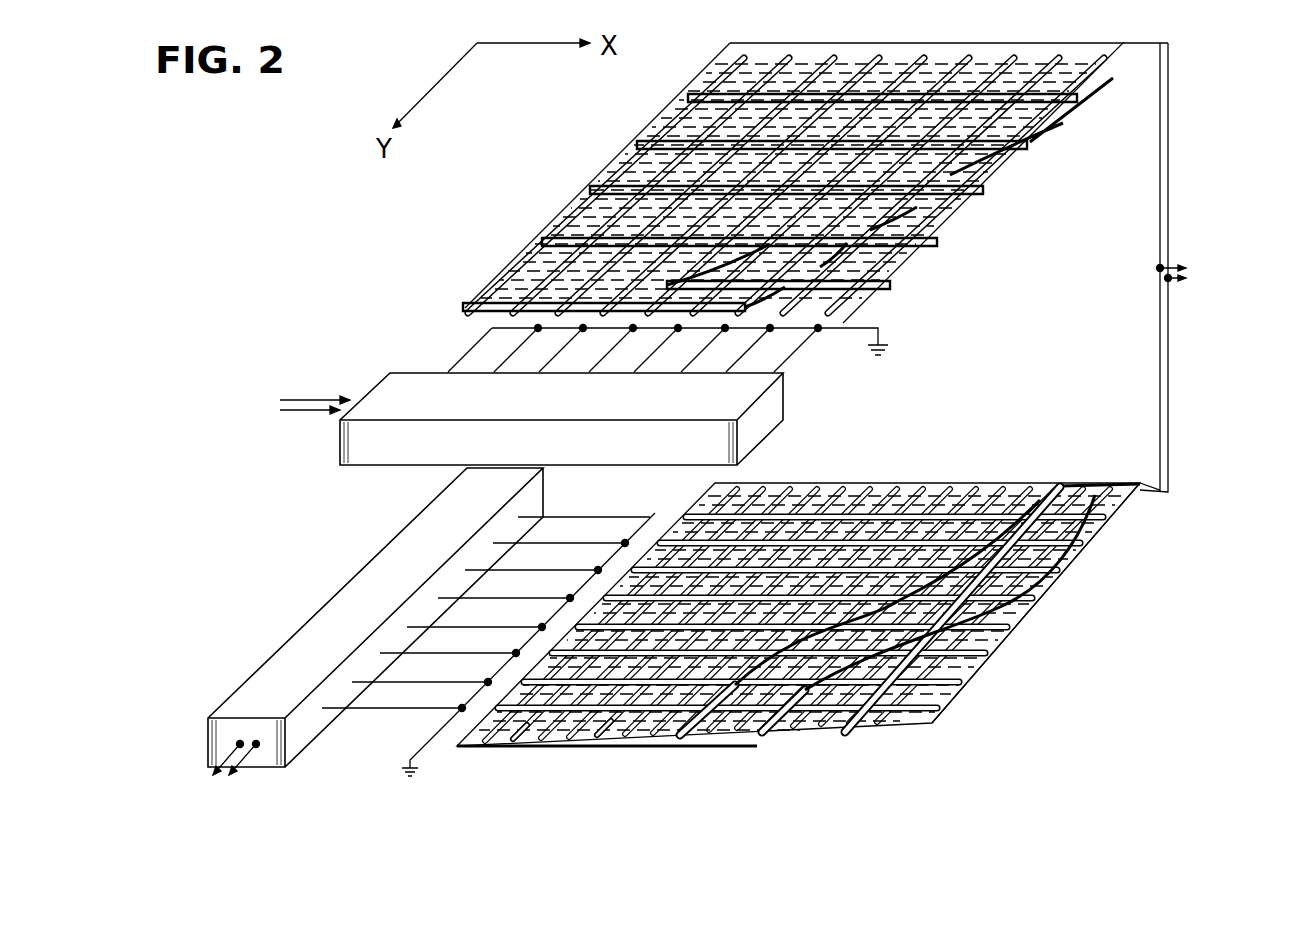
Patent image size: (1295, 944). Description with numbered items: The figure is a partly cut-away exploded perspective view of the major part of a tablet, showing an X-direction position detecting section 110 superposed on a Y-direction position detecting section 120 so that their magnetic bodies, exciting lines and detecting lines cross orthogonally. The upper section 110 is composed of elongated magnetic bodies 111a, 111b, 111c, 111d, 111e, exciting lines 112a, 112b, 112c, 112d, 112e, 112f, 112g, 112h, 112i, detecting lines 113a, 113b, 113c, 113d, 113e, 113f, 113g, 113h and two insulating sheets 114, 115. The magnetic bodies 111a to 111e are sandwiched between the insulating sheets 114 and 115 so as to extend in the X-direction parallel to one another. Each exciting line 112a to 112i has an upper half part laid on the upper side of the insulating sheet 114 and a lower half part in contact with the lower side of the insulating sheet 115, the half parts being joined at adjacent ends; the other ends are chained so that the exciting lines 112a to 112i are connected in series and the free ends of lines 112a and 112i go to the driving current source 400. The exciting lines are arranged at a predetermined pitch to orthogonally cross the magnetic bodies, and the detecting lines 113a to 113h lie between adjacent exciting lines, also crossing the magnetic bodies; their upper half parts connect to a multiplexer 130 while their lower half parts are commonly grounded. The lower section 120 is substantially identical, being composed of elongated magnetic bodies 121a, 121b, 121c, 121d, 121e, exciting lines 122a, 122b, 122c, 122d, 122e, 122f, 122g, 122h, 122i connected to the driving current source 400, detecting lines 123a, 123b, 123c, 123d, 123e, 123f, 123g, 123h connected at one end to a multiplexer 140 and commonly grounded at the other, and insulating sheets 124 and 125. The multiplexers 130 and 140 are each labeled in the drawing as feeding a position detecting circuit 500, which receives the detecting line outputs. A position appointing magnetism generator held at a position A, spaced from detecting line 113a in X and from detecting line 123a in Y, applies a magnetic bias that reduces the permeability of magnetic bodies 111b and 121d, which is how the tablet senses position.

The X-direction position detecting section 110 is at (1122, 44).
The elongated magnetic body 111a is at (1079, 103).
The elongated magnetic body 111b is at (1028, 150).
The elongated magnetic body 111c is at (985, 195).
The elongated magnetic body 111d is at (940, 245).
The elongated magnetic body 111e is at (892, 287).
The exciting line 112a is at (740, 56).
The exciting line 112b is at (788, 58).
The exciting line 112c is at (860, 40).
The exciting line 112d is at (882, 60).
The exciting line 112e is at (928, 60).
The exciting line 112f is at (973, 60).
The exciting line 112g is at (1018, 62).
The exciting line 112h is at (1062, 64).
The exciting line 112i is at (1108, 62).
The detecting line 113a is at (530, 328).
The detecting line 113b is at (492, 330).
The detecting line 113c is at (583, 326).
The detecting line 113d is at (633, 326).
The detecting line 113e is at (678, 330).
The detecting line 113f is at (725, 330).
The detecting line 113g is at (770, 330).
The detecting line 113h is at (818, 330).
The insulating sheet 114 is at (537, 240).
The insulating sheet 115 is at (1057, 124).
The position A is at (800, 148).
The Y-direction position detecting section 120 is at (997, 482).
The elongated magnetic body 121a is at (852, 736).
The elongated magnetic body 121b is at (768, 736).
The elongated magnetic body 121c is at (688, 738).
The elongated magnetic body 121d is at (597, 740).
The elongated magnetic body 121e is at (508, 740).
The exciting line 122a is at (1138, 482).
The exciting line 122b is at (1145, 517).
The exciting line 122c is at (1117, 547).
The exciting line 122d is at (1097, 575).
The exciting line 122e is at (1067, 602).
The exciting line 122f is at (1038, 630).
The exciting line 122g is at (1007, 658).
The exciting line 122h is at (973, 685).
The exciting line 122i is at (934, 725).
The detecting line 123a is at (608, 517).
The detecting line 123b is at (625, 542).
The detecting line 123c is at (598, 569).
The detecting line 123d is at (570, 597).
The detecting line 123e is at (542, 626).
The detecting line 123f is at (516, 652).
The detecting line 123g is at (488, 681).
The detecting line 123h is at (462, 707).
The insulating sheet 124 is at (893, 492).
The insulating sheet 125 is at (728, 748).
The multiplexer 130 is at (750, 430).
The multiplexer 140 is at (368, 570).
The driving current source 400 is at (1218, 297).
The position detecting circuit 500 is at (293, 586).